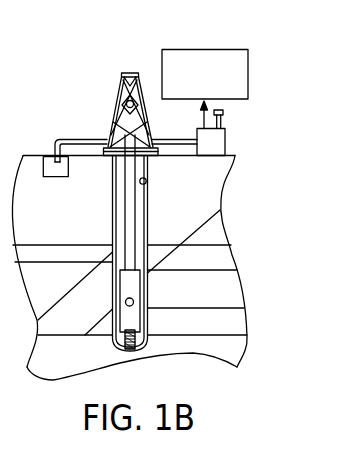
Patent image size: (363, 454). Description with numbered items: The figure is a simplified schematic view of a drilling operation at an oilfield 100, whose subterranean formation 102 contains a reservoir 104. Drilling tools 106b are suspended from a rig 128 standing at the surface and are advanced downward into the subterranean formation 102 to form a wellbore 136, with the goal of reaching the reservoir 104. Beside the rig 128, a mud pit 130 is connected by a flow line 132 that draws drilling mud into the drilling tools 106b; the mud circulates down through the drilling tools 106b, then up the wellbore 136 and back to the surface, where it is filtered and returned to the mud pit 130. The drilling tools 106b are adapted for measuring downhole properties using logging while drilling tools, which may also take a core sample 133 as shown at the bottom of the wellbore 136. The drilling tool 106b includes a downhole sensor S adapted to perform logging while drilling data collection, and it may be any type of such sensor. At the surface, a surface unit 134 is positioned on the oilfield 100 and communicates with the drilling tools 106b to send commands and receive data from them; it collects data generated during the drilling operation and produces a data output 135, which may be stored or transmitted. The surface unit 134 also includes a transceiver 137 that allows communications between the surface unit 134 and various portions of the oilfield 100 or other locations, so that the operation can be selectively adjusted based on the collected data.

The oilfield 100 is at (65, 76).
The subterranean formation 102 is at (161, 246).
The reservoir 104 is at (213, 300).
The drilling tools 106b is at (120, 298).
The rig 128 is at (114, 112).
The mud pit 130 is at (57, 178).
The flow line 132 is at (54, 145).
The core sample 133 is at (118, 343).
The surface unit 134 is at (226, 143).
The data output 135 is at (203, 48).
The wellbore 136 is at (146, 182).
The transceiver 137 is at (224, 114).
The downhole sensor S is at (120, 84).